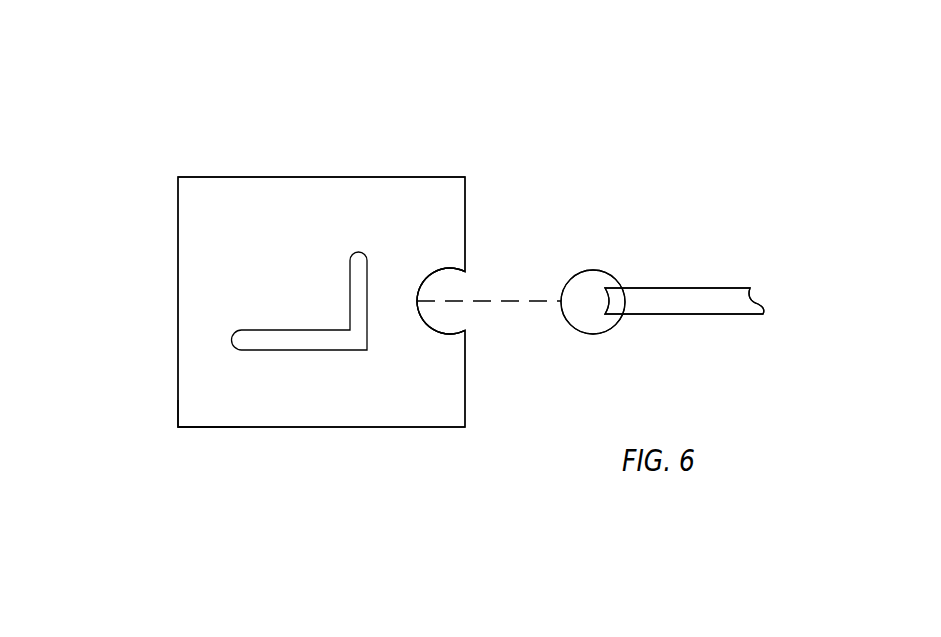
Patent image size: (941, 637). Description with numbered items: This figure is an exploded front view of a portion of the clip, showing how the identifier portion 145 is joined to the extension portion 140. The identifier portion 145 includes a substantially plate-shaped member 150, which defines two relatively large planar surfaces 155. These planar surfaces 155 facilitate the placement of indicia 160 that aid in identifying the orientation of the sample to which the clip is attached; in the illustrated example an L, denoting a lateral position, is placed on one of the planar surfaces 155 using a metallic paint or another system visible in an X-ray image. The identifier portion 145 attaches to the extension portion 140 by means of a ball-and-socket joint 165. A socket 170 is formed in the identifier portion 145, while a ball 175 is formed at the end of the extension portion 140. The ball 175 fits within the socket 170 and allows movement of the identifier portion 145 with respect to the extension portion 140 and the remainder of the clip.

The extension portion 140 is at (737, 298).
The identifier portion 145 is at (400, 136).
The plate-shaped member 150 is at (232, 178).
The planar surfaces 155 is at (222, 403).
The indicia 160 is at (328, 340).
The ball-and-socket joint 165 is at (588, 218).
The socket 170 is at (441, 329).
The ball 175 is at (590, 285).